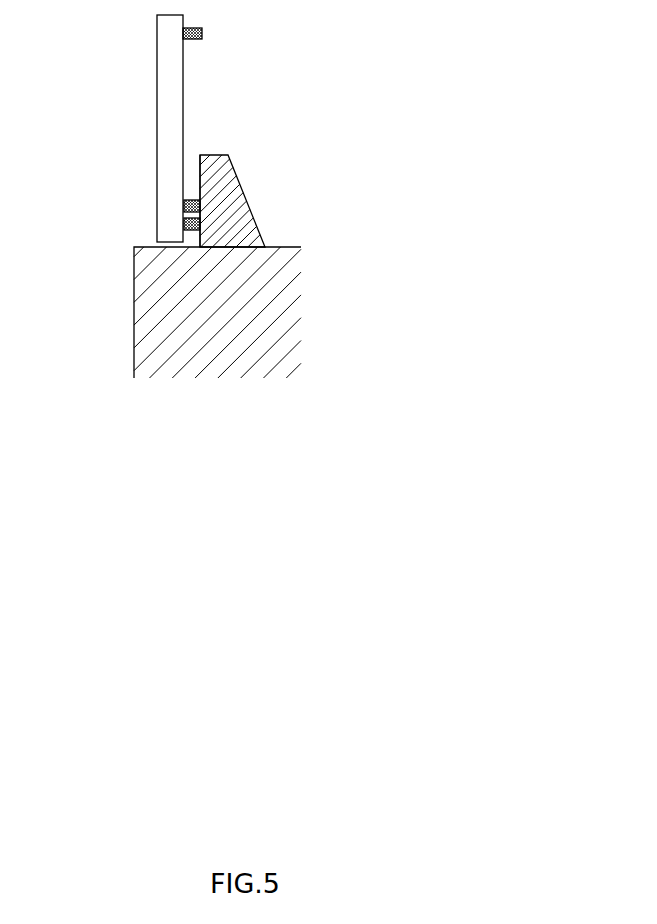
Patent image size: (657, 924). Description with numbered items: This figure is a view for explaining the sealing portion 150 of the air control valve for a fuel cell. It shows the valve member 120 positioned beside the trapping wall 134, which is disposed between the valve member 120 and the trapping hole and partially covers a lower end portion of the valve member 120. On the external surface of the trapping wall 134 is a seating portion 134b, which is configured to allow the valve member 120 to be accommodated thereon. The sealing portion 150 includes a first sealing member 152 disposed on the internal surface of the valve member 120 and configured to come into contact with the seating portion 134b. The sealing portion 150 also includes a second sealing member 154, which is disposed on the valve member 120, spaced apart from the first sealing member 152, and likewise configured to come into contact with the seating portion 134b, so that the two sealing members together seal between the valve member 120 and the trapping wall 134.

The valve member 120 is at (165, 95).
The trapping wall 134 is at (235, 201).
The seating portion 134b is at (200, 158).
The sealing portion 150 is at (113, 201).
The first sealing member 152 is at (184, 225).
The second sealing member 154 is at (184, 205).